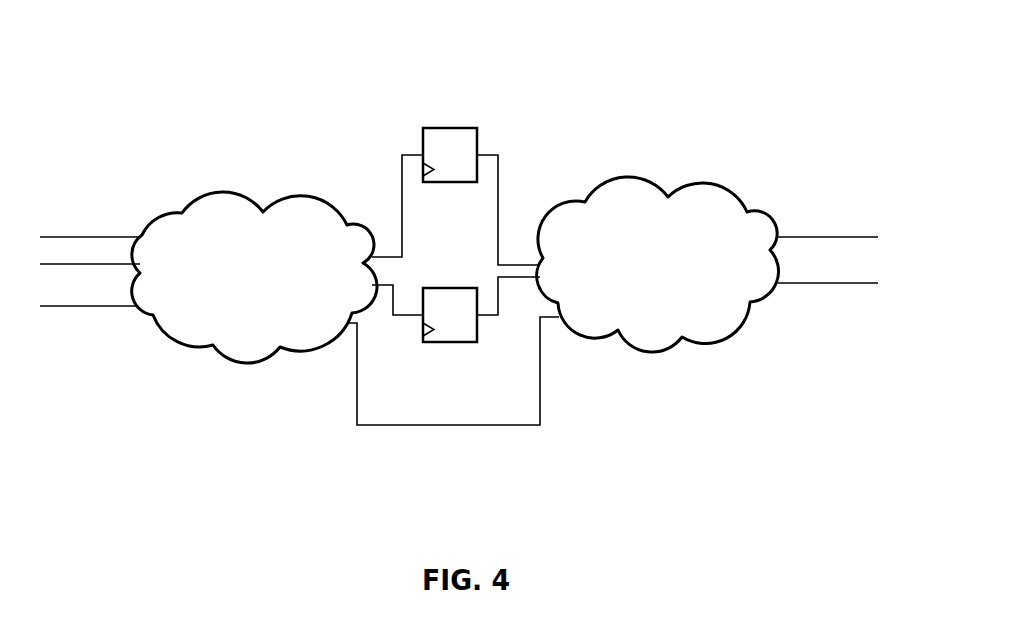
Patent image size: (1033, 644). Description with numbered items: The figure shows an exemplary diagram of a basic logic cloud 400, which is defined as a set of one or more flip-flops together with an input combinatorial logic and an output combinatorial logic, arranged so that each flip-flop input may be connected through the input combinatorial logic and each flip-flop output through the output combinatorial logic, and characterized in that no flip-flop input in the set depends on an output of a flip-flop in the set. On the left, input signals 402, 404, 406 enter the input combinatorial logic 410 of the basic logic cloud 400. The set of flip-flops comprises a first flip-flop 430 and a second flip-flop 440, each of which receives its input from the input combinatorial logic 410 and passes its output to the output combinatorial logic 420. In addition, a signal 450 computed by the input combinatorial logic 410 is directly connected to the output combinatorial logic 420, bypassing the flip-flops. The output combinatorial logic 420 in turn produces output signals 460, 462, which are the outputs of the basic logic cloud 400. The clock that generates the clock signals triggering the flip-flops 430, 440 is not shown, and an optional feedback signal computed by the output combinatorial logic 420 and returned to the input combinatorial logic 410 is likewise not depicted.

The basic logic cloud 400 is at (218, 127).
The input signal 402 is at (57, 237).
The input signal 404 is at (57, 264).
The input signal 406 is at (57, 306).
The input combinatorial logic 410 is at (305, 196).
The output combinatorial logic 420 is at (650, 184).
The first flip-flop 430 is at (443, 128).
The second flip-flop 440 is at (444, 288).
The signal 450 is at (437, 425).
The output signal 460 is at (803, 237).
The output signal 462 is at (806, 283).